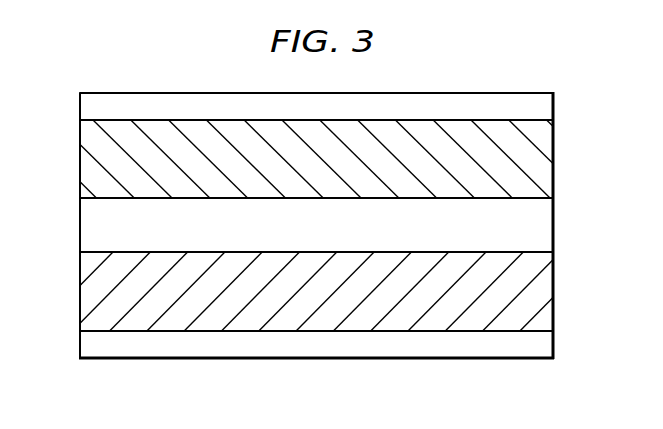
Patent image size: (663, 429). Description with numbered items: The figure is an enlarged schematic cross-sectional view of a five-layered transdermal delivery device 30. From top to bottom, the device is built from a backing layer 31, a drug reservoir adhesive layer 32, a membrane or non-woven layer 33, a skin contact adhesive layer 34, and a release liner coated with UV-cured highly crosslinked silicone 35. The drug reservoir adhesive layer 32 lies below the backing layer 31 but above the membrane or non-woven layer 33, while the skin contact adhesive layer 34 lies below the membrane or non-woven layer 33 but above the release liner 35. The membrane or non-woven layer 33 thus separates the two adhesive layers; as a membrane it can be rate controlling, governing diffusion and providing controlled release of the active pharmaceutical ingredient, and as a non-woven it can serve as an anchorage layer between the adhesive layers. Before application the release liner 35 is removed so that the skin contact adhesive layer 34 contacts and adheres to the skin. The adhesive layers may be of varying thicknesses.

The 5-layered transdermal delivery device 30 is at (578, 90).
The backing layer 31 is at (478, 104).
The drug reservoir adhesive layer 32 is at (88, 162).
The membrane or non-woven layer 33 is at (88, 227).
The skin contact adhesive layer 34 is at (88, 293).
The release liner coated with UV-cured highly crosslinked silicone 35 is at (352, 344).